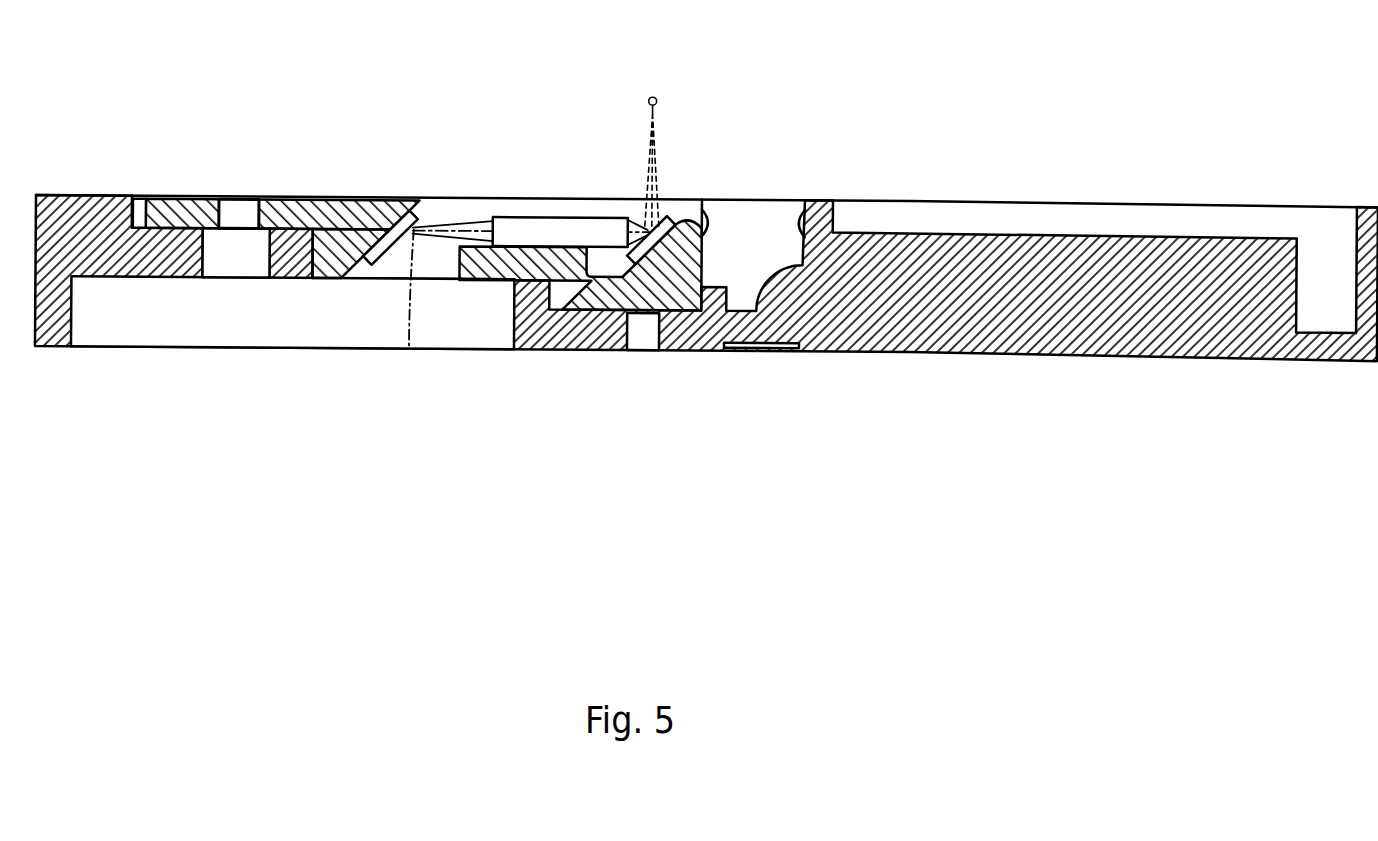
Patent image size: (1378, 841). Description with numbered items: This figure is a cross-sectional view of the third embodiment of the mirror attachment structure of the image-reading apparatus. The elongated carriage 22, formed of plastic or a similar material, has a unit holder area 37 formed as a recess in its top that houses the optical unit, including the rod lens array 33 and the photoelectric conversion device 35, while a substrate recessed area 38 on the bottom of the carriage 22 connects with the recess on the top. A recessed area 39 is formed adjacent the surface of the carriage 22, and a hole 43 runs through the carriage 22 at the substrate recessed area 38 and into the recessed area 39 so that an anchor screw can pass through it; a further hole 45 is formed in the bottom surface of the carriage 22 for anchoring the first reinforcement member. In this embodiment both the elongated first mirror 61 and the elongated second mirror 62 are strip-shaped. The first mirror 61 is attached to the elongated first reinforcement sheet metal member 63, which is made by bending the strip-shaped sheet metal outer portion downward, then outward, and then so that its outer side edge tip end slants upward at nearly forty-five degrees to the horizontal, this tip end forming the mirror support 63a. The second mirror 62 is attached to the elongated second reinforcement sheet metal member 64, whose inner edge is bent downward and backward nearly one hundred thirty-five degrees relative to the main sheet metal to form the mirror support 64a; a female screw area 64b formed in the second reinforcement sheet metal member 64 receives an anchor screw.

The carriage 22 is at (1086, 342).
The rod lens array 33 is at (562, 207).
The photoelectric conversion device 35 is at (410, 343).
The unit holder area 37 is at (455, 207).
The substrate recessed area 38 is at (207, 332).
The recessed area 39 is at (140, 194).
The hole 43 is at (252, 261).
The hole 45 is at (650, 330).
The first mirror 61 is at (688, 222).
The second mirror 62 is at (417, 203).
The first reinforcement sheet metal member 63 is at (584, 299).
The mirror support 63a is at (702, 228).
The second reinforcement sheet metal member 64 is at (181, 195).
The mirror support 64a is at (383, 208).
The female screw area 64b is at (244, 195).